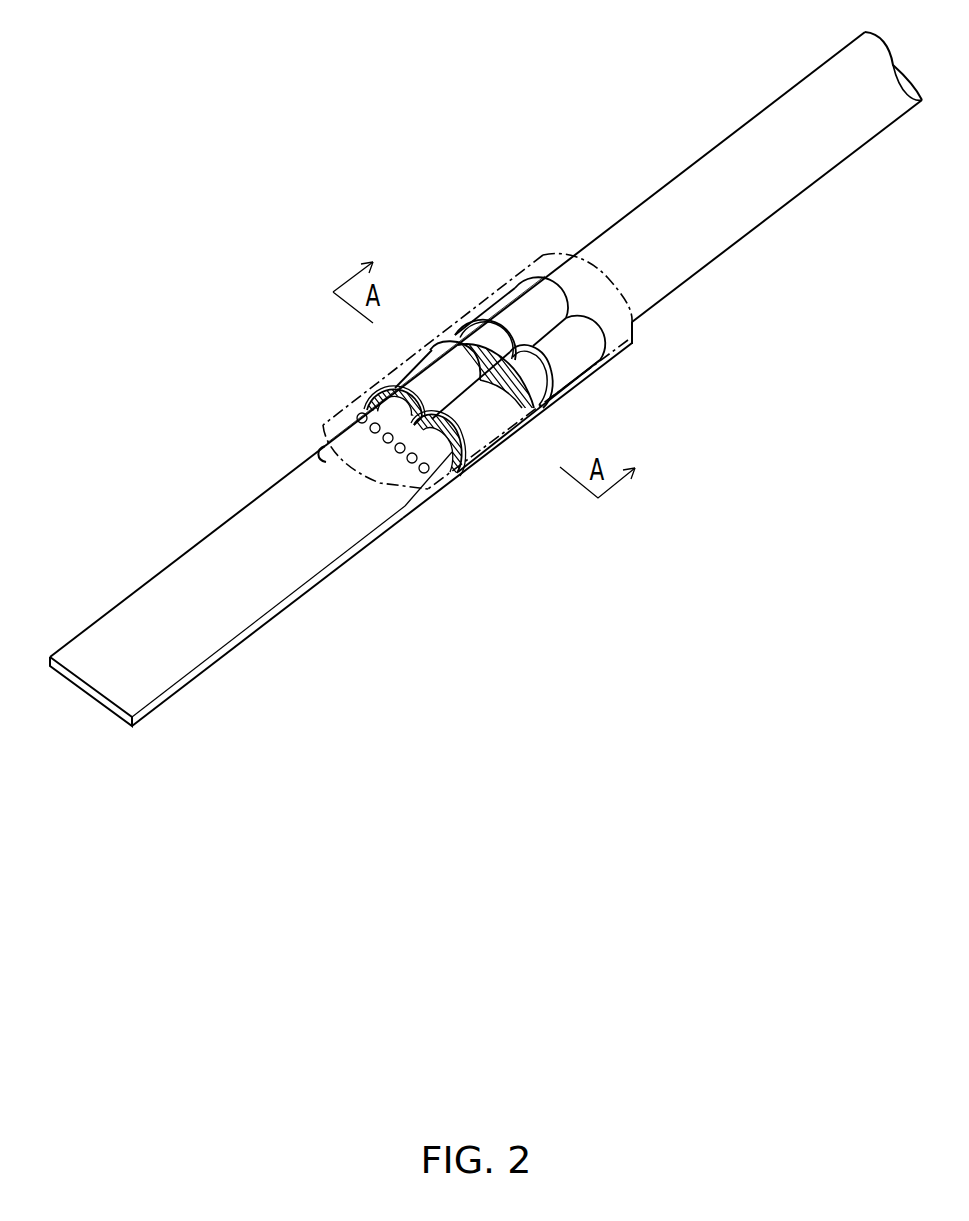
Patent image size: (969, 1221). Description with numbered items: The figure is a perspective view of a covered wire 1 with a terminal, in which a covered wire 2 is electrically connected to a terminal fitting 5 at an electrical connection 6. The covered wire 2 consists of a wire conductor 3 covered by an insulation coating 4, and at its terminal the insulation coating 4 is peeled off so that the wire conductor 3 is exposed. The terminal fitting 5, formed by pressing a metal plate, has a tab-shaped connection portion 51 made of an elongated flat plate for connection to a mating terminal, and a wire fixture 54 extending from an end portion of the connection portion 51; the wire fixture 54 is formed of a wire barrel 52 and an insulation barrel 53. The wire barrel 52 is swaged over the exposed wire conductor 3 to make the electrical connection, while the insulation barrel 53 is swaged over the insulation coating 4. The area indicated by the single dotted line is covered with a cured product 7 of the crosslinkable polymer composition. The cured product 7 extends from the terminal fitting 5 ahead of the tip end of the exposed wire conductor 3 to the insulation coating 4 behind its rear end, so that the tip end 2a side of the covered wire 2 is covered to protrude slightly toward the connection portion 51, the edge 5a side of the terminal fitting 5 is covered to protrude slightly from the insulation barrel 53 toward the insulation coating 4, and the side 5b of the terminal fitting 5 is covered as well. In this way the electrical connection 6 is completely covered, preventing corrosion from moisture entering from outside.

The covered wire with a terminal 1 is at (432, 399).
The covered wire 2 is at (733, 203).
The tip end 2a is at (387, 492).
The wire conductor 3 is at (577, 378).
The insulation coating 4 is at (688, 275).
The terminal fitting 5 is at (390, 441).
The edge 5a is at (633, 323).
The side 5b is at (457, 337).
The connection portion 51 is at (208, 635).
The wire barrel 52 is at (405, 380).
The insulation barrel 53 is at (515, 300).
The wire fixture 54 is at (501, 274).
The electrical connection 6 is at (395, 392).
The cured product 7 is at (460, 473).